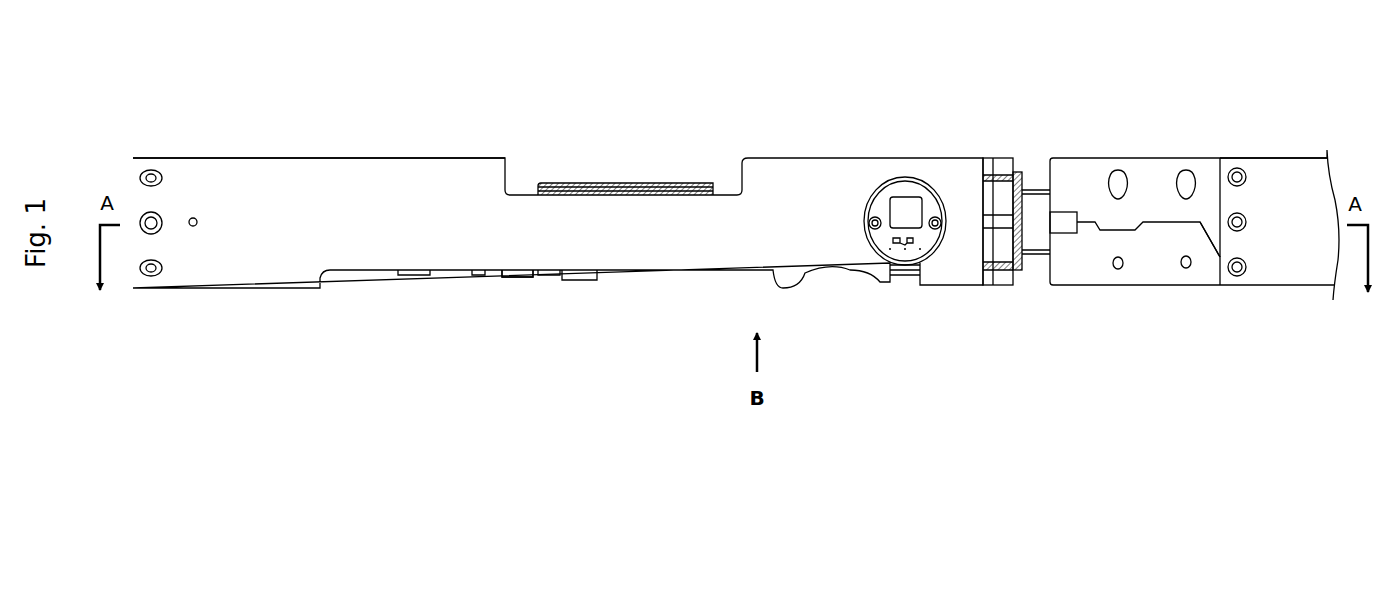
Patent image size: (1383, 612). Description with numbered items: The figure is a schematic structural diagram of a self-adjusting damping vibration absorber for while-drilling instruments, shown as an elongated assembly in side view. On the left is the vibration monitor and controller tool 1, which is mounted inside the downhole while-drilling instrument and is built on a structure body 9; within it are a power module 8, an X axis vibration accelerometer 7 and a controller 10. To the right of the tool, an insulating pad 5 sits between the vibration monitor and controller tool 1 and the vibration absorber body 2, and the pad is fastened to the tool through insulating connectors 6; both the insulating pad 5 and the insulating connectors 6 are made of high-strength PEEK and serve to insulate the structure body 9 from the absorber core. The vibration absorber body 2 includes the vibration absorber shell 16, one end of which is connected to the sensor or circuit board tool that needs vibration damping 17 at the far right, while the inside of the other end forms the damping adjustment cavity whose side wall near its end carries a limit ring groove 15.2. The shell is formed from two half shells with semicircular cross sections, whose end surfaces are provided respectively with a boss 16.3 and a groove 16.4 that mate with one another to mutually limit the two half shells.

The vibration monitor and controller tool 1 is at (297, 208).
The vibration absorber body 2 is at (1088, 188).
The insulating pad 5 is at (989, 156).
The insulating connector 6 is at (1017, 170).
The X axis vibration accelerometer 7 is at (907, 200).
The power module 8 is at (657, 181).
The structure body 9 is at (335, 156).
The controller 10 is at (518, 268).
The limit ring groove 15.2 is at (1062, 226).
The vibration absorber shell 16 is at (1198, 250).
The boss 16.3 is at (1118, 221).
The groove 16.4 is at (1132, 226).
The tool that needs vibration damping 17 is at (1285, 175).